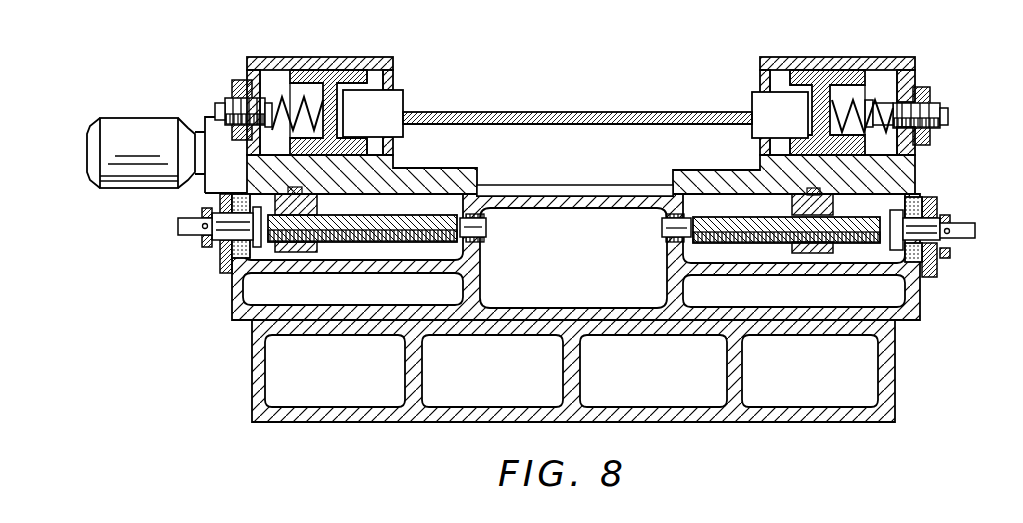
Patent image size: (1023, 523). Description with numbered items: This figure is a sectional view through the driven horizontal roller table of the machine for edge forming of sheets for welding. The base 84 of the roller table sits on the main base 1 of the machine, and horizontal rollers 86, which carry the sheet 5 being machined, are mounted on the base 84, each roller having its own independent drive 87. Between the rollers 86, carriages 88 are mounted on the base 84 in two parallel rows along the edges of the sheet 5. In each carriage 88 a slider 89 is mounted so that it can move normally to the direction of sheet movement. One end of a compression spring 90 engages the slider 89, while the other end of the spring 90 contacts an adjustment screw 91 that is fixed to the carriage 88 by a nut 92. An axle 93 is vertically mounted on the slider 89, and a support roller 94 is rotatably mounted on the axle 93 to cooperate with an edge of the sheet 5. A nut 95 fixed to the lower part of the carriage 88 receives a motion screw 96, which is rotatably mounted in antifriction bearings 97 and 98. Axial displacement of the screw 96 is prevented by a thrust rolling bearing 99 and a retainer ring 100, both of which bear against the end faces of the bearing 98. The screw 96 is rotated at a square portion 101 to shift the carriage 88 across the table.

The base 1 is at (893, 373).
The sheet 5 is at (560, 112).
The base 84 is at (913, 313).
The horizontal rollers 86 is at (628, 137).
The independent drives 87 is at (136, 128).
The carriages 88 is at (311, 64).
The slider 89 is at (362, 72).
The compression spring 90 is at (262, 146).
The adjustment screw 91 is at (230, 103).
The nut 92 is at (236, 80).
The axle 93 is at (380, 80).
The support roller 94 is at (398, 107).
The nut 95 is at (268, 190).
The motion screw 96 is at (410, 244).
The antifriction bearing 97 is at (482, 241).
The antifriction bearing 98 is at (222, 265).
The thrust rolling bearing 99 is at (210, 206).
The retainer ring 100 is at (208, 247).
The square portion 101 is at (187, 235).